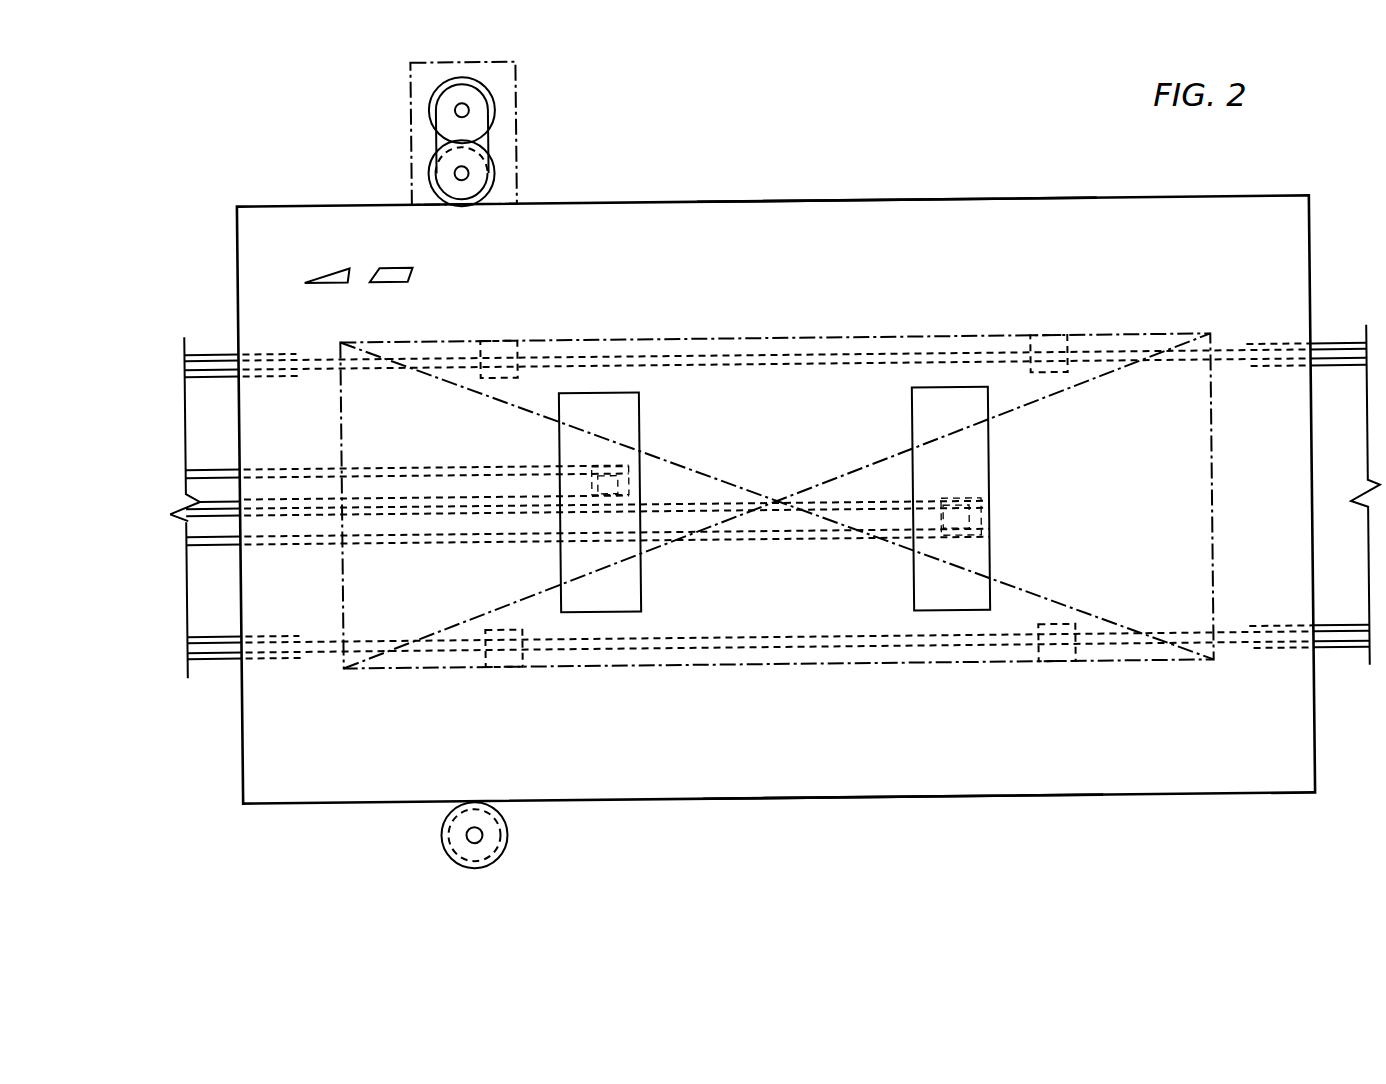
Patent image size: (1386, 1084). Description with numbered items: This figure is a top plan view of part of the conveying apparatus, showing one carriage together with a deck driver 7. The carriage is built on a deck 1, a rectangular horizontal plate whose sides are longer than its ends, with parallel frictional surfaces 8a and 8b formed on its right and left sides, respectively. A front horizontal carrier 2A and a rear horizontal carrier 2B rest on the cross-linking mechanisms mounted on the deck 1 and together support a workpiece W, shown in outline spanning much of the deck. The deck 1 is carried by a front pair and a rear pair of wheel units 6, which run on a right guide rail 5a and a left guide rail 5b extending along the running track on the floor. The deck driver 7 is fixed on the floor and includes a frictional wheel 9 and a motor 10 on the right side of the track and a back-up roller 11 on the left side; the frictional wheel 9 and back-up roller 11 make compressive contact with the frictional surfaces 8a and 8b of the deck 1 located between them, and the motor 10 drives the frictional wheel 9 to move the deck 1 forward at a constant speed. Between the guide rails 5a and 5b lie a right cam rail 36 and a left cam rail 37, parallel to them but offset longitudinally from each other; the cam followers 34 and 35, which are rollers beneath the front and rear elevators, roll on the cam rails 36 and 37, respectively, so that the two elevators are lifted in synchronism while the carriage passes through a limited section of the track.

The deck 1 is at (785, 222).
The front horizontal carrier 2A is at (605, 403).
The rear horizontal carrier 2B is at (930, 400).
The right guide rail 5a is at (218, 355).
The left guide rail 5b is at (214, 642).
The wheel unit 6 is at (500, 338).
The deck driver 7 is at (520, 134).
The frictional surface 8a is at (944, 200).
The frictional surface 8b is at (908, 798).
The frictional wheel 9 is at (434, 170).
The motor 10 is at (434, 101).
The back-up roller 11 is at (504, 832).
The cam follower 34 is at (600, 477).
The cam follower 35 is at (954, 500).
The right cam rail 36 is at (220, 486).
The left cam rail 37 is at (215, 517).
The workpiece W is at (765, 664).